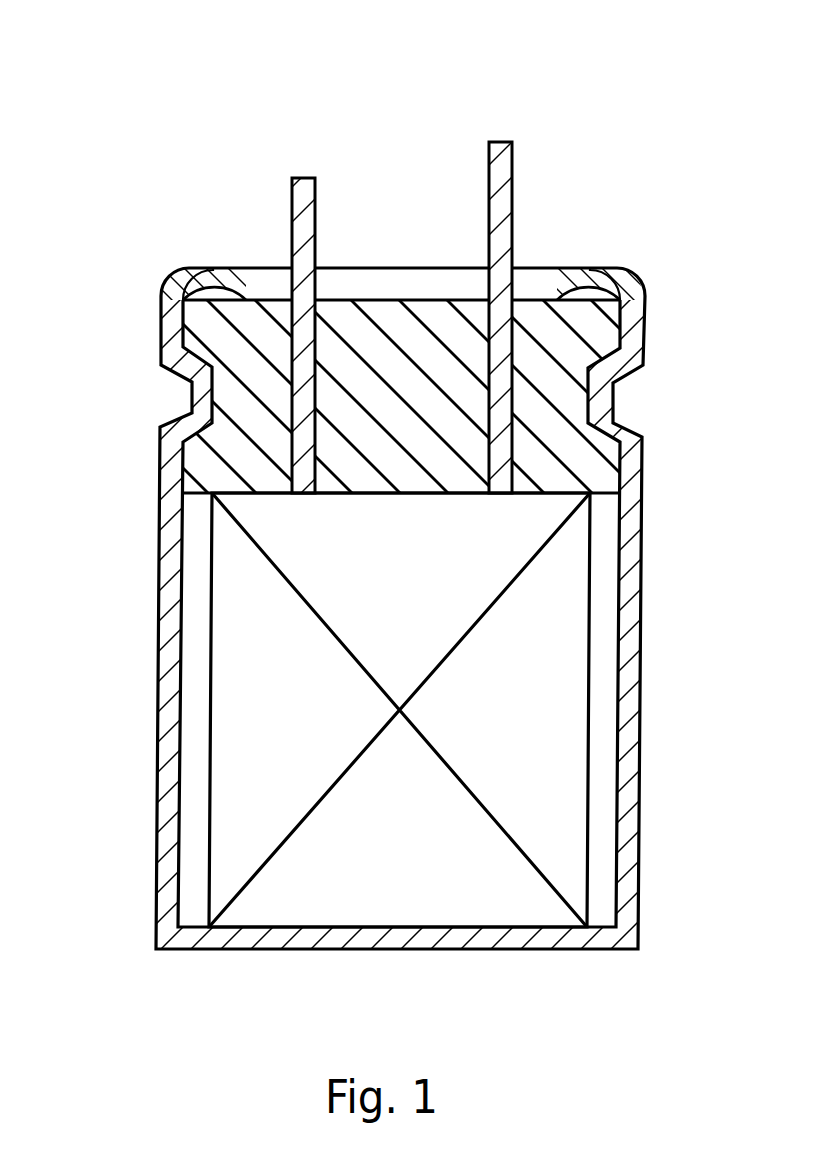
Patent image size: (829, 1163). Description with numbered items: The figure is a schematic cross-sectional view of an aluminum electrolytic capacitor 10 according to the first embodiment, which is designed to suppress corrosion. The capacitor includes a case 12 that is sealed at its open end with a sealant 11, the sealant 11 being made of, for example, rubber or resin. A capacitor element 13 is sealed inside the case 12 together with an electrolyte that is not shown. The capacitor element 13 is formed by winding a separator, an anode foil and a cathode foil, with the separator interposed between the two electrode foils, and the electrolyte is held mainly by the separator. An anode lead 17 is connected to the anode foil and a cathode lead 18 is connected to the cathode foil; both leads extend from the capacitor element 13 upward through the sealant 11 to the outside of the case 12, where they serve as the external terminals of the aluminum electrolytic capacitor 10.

The aluminum electrolytic capacitor 10 is at (176, 116).
The sealant 11 is at (377, 312).
The case 12 is at (157, 722).
The capacitor element 13 is at (558, 647).
The anode lead 17 is at (500, 142).
The cathode lead 18 is at (310, 178).